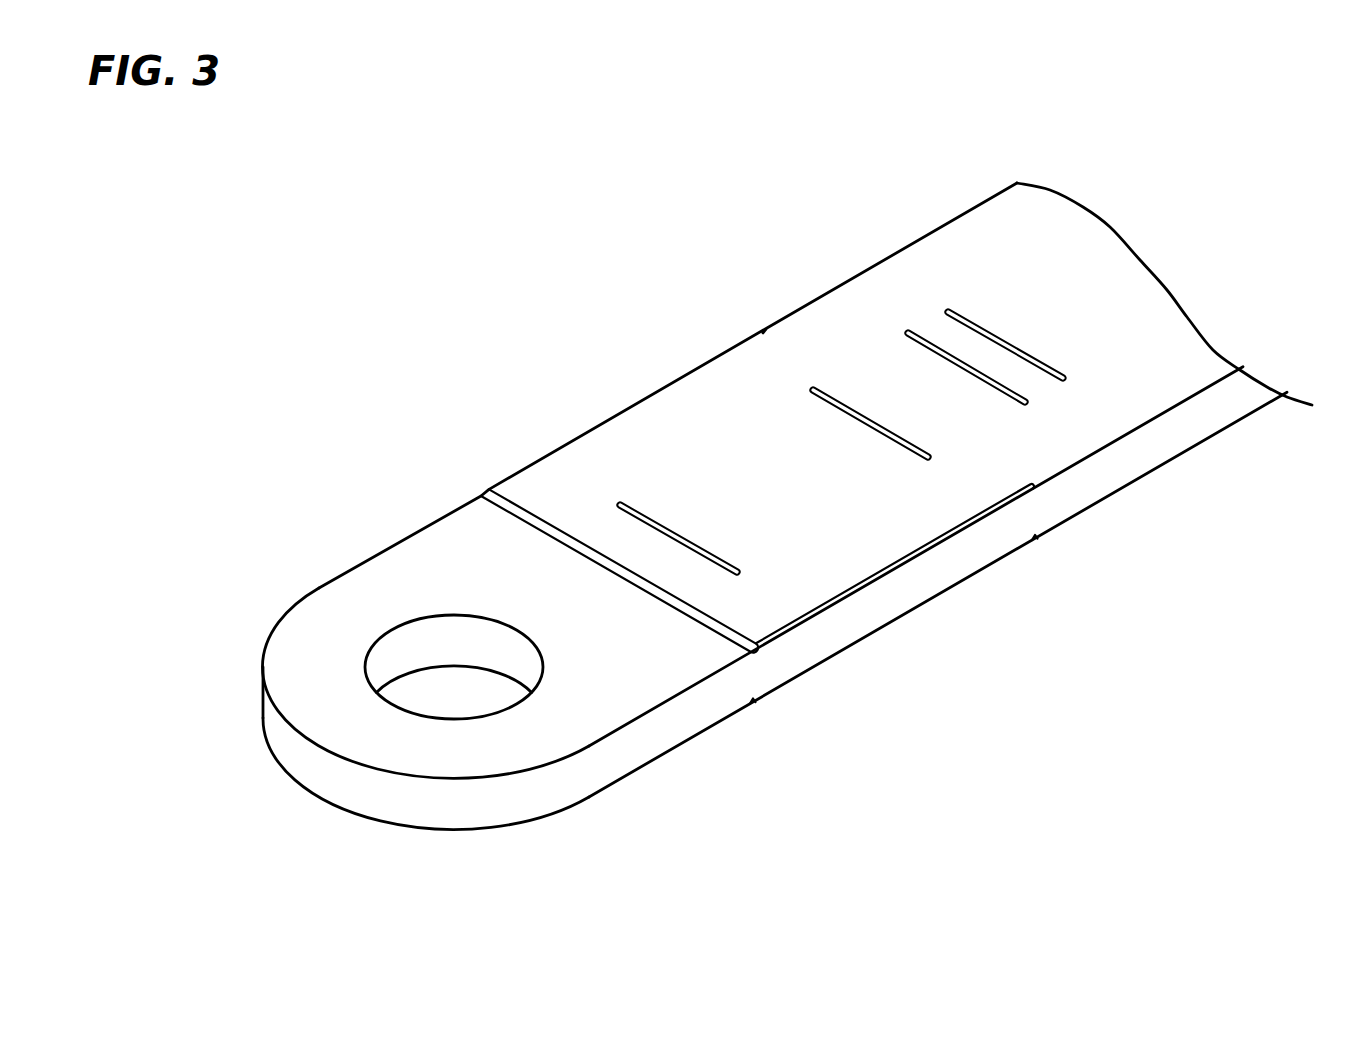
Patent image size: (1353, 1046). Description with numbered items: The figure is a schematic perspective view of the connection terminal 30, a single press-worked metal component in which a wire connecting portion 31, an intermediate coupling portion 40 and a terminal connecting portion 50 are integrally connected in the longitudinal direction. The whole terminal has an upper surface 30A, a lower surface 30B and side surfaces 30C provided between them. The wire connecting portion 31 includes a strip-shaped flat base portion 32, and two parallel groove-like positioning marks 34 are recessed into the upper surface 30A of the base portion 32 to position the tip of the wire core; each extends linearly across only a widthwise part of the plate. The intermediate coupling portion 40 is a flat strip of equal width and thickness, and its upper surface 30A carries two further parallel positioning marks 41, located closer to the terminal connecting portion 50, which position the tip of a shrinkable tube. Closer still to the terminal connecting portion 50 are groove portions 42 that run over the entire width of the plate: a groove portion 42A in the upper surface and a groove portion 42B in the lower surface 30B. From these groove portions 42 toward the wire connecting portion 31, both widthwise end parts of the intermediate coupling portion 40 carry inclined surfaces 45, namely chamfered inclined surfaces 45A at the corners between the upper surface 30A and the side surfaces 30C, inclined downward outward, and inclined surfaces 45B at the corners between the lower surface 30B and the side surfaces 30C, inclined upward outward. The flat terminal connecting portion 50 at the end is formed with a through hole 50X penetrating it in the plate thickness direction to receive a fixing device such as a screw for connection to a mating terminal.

The connection terminal 30 is at (375, 295).
The upper surface 30A is at (926, 238).
The lower surface 30B is at (1088, 509).
The side surfaces 30C is at (1113, 468).
The wire connecting portion 31 is at (1167, 324).
The base portion 32 is at (1185, 362).
The positioning marks 34 is at (930, 345).
The intermediate coupling portion 40 is at (836, 572).
The positioning marks 41 is at (640, 514).
The groove portions 42 is at (657, 590).
The groove portion 42A is at (510, 503).
The groove portion 42B is at (753, 702).
The inclined surfaces 45 is at (696, 368).
The inclined surface 45A is at (983, 520).
The inclined surface 45B is at (937, 592).
The terminal connecting portion 50 is at (507, 750).
The through hole 50X is at (447, 645).